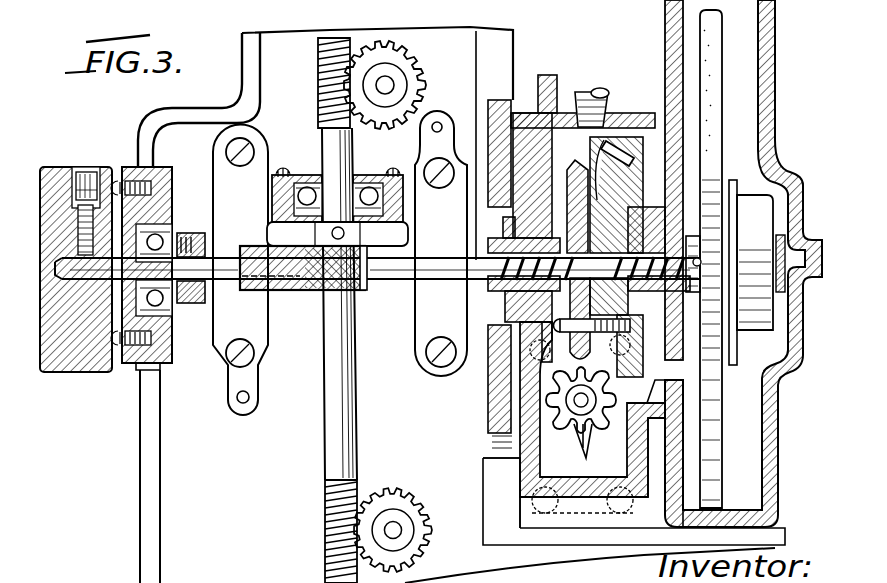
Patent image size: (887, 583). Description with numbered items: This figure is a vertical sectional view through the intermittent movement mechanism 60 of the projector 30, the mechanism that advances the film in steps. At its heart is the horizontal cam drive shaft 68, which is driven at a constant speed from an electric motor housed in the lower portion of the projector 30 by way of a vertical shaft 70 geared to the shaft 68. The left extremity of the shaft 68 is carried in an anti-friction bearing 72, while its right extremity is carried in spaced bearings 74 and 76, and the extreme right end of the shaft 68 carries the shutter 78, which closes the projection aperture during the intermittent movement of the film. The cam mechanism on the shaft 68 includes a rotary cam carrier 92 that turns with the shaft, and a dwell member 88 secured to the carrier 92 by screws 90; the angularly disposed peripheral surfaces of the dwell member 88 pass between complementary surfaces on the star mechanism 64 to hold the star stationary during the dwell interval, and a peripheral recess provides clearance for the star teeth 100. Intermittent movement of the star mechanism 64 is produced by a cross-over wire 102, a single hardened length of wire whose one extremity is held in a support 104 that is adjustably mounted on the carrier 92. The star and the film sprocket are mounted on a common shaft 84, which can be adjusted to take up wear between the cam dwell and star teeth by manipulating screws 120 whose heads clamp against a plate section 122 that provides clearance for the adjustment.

The projector 30 is at (524, 39).
The intermittent movement mechanism 60 is at (662, 362).
The star mechanism 64 is at (548, 448).
The shaft 68 is at (390, 272).
The vertical shaft 70 is at (335, 437).
The anti-friction bearing 72 is at (182, 312).
The bearing 74 is at (498, 292).
The bearing 76 is at (694, 232).
The shutter 78 is at (718, 484).
The common shaft 84 is at (573, 400).
The dwell member 88 is at (578, 159).
The screws 90 is at (500, 320).
The rotary cam carrier 92 is at (632, 140).
The star teeth 100 is at (582, 460).
The cross-over wire 102 is at (608, 140).
The support 104 is at (642, 178).
The screws 120 is at (500, 381).
The plate section 122 is at (518, 502).